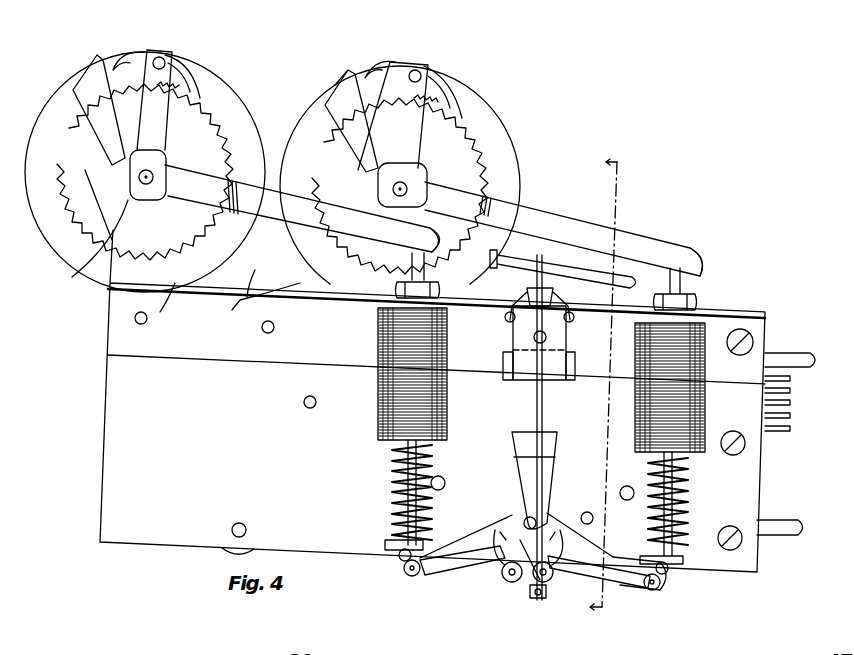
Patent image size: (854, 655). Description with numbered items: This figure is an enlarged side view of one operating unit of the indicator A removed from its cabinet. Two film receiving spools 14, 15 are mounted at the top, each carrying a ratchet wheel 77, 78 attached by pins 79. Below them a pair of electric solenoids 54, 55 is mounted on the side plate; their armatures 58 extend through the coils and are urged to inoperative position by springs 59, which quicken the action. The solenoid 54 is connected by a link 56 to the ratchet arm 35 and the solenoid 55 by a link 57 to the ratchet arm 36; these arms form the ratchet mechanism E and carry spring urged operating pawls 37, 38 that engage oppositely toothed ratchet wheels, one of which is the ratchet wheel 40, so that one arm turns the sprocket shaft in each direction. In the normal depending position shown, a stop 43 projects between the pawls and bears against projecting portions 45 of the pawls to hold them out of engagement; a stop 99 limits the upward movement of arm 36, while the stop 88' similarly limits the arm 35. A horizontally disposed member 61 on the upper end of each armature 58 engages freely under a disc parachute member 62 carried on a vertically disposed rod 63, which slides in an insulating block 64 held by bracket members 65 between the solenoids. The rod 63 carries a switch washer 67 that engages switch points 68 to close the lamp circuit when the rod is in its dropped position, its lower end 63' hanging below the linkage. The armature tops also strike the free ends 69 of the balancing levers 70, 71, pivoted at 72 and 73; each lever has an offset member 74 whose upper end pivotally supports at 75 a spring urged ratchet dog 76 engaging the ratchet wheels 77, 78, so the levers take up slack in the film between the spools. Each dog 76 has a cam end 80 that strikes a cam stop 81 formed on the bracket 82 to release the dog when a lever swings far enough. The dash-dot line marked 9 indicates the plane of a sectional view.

The section line 9- 9 is at (606, 379).
The film receiving spool 14 is at (258, 140).
The film receiving spool 15 is at (518, 178).
The ratchet arm 35 is at (640, 590).
The ratchet arm 36 is at (450, 572).
The operating pawl 37 is at (590, 580).
The operating pawl 38 is at (504, 582).
The ratchet wheel 40 is at (512, 512).
The stop 43 is at (545, 600).
The projecting portion 45 is at (552, 584).
The electric solenoid 54 is at (636, 420).
The electric solenoid 55 is at (448, 416).
The link 56 is at (662, 584).
The link 57 is at (404, 568).
The armature 58 is at (395, 475).
The spring 59 is at (396, 496).
The horizontally disposed member 61 is at (432, 265).
The disc parachute member 62 is at (625, 245).
The vertically disposed rod 63 is at (560, 427).
The rod end 63' is at (526, 612).
The insulating block 64 is at (522, 382).
The bracket member 65 is at (503, 360).
The switch washer 67 is at (556, 300).
The switch points 68 is at (520, 318).
The free end 69 is at (440, 215).
The lever 70 is at (573, 225).
The lever 71 is at (243, 294).
The pivot 72 is at (408, 185).
The pivot 73 is at (78, 275).
The offset member 74 is at (160, 112).
The pivot 75 is at (160, 60).
The ratchet dog 76 is at (188, 72).
The ratchet wheel 77 is at (470, 138).
The ratchet wheel 78 is at (218, 118).
The pin 79 is at (203, 152).
The cam end 80 is at (120, 62).
The cam stop 81 is at (90, 58).
The bracket 82 is at (242, 305).
The hole 88' is at (625, 503).
The stop 99 is at (443, 490).
The indicator A is at (565, 187).
The ratchet mechanism E is at (562, 508).